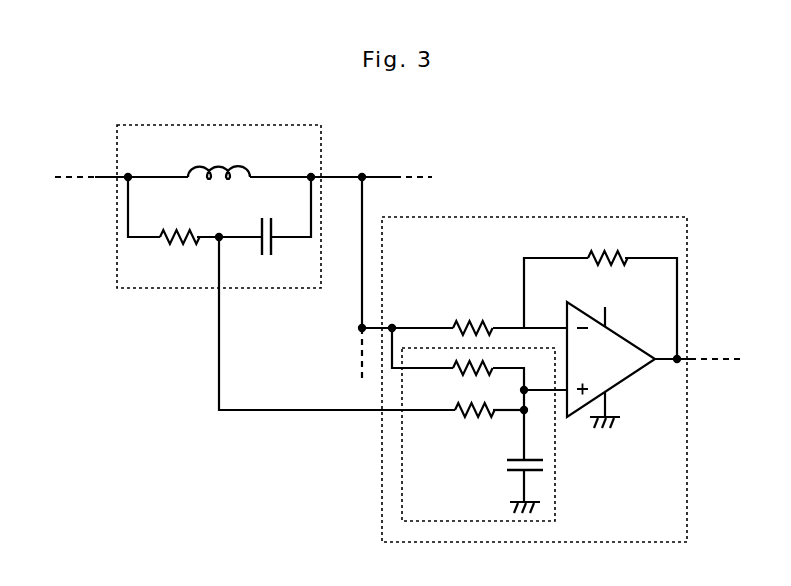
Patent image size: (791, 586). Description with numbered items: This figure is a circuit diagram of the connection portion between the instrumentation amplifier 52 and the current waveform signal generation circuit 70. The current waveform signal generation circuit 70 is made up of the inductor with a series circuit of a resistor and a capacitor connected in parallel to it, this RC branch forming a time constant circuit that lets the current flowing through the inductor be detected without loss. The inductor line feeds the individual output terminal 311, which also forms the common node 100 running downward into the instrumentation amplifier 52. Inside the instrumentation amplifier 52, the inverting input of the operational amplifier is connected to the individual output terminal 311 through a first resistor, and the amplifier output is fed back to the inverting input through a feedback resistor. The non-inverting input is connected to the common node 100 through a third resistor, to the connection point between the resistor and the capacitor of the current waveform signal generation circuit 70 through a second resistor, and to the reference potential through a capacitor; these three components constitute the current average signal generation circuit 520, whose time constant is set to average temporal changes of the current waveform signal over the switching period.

The current waveform signal generation circuit 70 is at (322, 145).
The individual output terminal 311 is at (364, 176).
The common node 100 is at (363, 207).
The instrumentation amplifier 52 is at (551, 362).
The current average signal generation circuit 520 is at (556, 470).